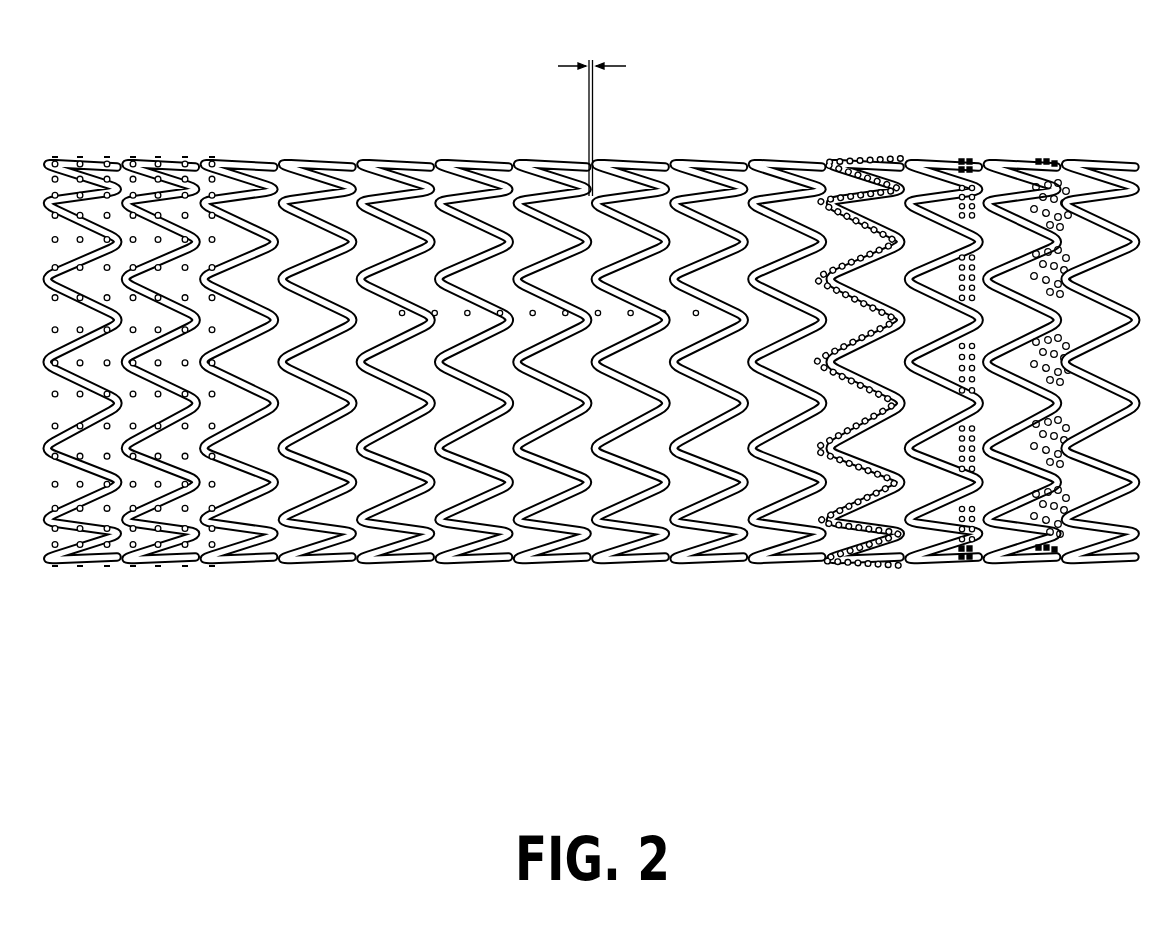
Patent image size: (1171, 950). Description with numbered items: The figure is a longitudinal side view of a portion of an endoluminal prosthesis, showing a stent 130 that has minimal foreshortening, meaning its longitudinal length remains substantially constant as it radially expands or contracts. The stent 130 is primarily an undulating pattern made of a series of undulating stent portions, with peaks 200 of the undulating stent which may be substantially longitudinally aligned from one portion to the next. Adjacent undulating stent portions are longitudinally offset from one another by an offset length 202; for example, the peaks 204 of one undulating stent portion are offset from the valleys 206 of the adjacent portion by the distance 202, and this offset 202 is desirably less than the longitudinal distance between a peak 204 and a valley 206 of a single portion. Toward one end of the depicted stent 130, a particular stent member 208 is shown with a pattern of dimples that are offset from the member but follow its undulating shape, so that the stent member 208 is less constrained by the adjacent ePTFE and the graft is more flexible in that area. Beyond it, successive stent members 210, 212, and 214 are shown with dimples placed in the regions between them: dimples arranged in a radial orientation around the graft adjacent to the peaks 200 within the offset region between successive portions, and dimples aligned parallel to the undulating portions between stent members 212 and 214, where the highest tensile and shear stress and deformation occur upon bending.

The stent 130 is at (608, 342).
The peaks of the undulating stent 200 is at (510, 403).
The offset length 202 is at (592, 62).
The peaks 204 is at (585, 182).
The valleys 206 is at (598, 197).
The stent member 208 is at (868, 558).
The stent member 210 is at (930, 560).
The stent member 212 is at (1010, 558).
The stent member 214 is at (1095, 558).